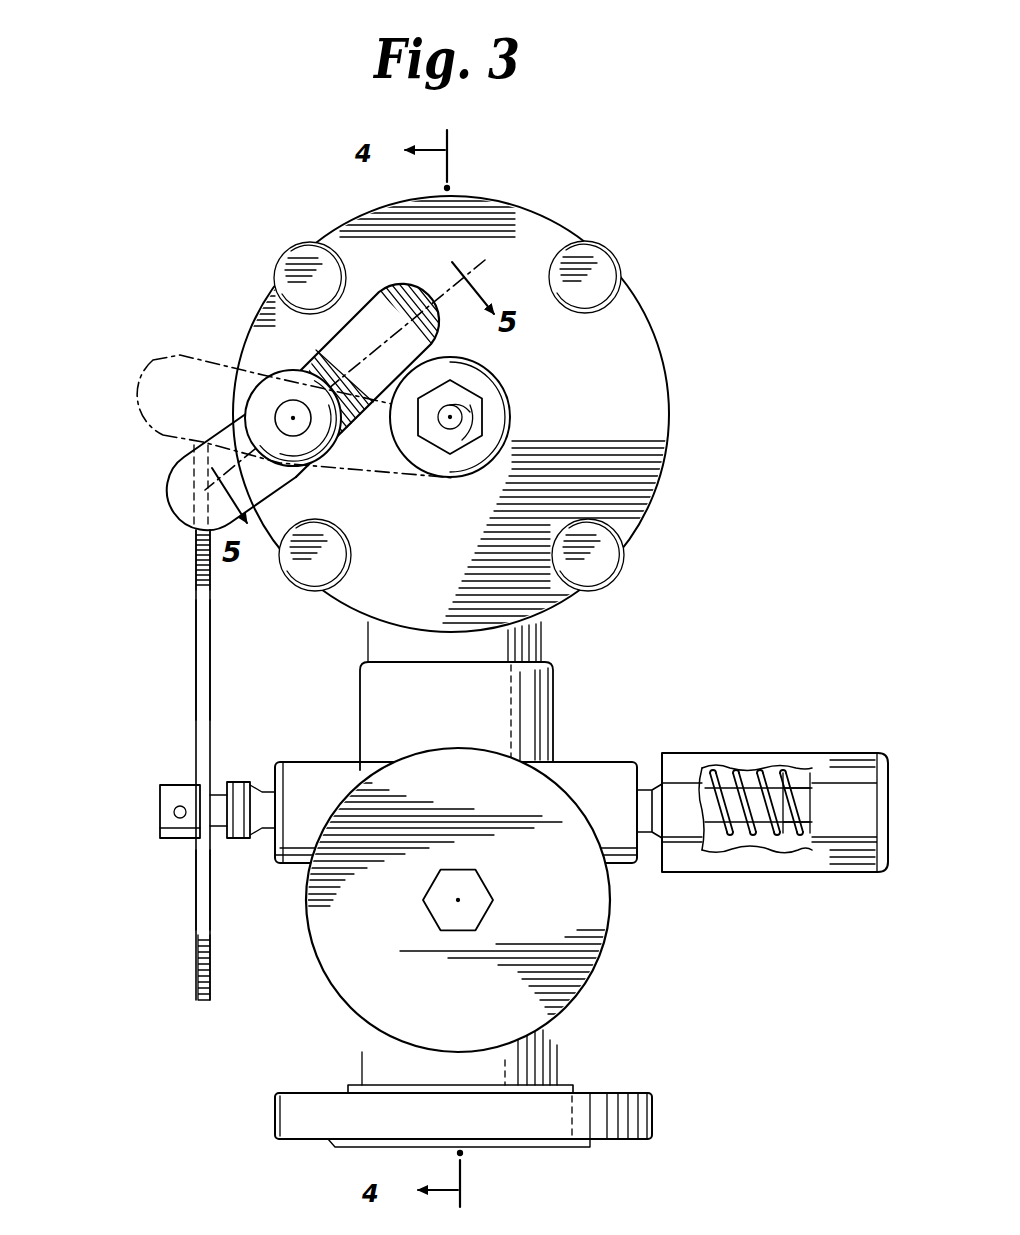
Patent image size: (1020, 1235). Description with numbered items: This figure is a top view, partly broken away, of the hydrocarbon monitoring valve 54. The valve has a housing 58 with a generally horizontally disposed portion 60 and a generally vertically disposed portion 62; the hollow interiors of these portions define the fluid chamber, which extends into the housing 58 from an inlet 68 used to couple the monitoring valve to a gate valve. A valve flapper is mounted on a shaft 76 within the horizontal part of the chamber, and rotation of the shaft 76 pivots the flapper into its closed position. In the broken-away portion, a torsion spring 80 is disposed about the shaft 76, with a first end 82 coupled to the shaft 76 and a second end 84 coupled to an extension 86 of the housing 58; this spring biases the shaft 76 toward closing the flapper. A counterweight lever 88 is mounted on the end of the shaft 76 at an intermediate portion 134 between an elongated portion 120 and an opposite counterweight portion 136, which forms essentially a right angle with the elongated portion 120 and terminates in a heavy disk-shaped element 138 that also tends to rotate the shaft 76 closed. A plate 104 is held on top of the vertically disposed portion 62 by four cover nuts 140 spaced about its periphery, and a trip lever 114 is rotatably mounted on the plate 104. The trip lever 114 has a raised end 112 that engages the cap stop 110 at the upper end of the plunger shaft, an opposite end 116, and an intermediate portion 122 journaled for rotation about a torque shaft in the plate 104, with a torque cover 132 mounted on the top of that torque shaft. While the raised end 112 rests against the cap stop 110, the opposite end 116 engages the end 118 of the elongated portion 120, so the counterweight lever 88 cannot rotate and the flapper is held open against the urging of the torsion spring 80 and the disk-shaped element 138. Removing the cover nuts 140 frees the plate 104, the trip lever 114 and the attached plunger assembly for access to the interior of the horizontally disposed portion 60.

The hydrocarbon monitoring valve 54 is at (648, 950).
The housing 58 is at (546, 645).
The horizontally disposed portion 60 is at (336, 994).
The vertically disposed portion 62 is at (670, 432).
The inlet 68 is at (566, 1148).
The shaft 76 is at (800, 832).
The torsion spring 80 is at (742, 780).
The first end 82 is at (796, 782).
The second end 84 is at (712, 768).
The extension 86 is at (712, 862).
The counterweight lever 88 is at (222, 715).
The plate 104 is at (640, 343).
The cap stop 110 is at (500, 400).
The raised end 112 is at (407, 290).
The trip lever 114 is at (300, 352).
The opposite end 116 is at (178, 494).
The end 118 is at (195, 540).
The elongated portion 120 is at (196, 668).
The intermediate portion 122 is at (296, 464).
The torque cover 132 is at (252, 414).
The intermediate portion 134 is at (200, 786).
The counterweight portion 136 is at (196, 880).
The disk-shaped element 138 is at (200, 970).
The cover nuts 140 is at (297, 262).